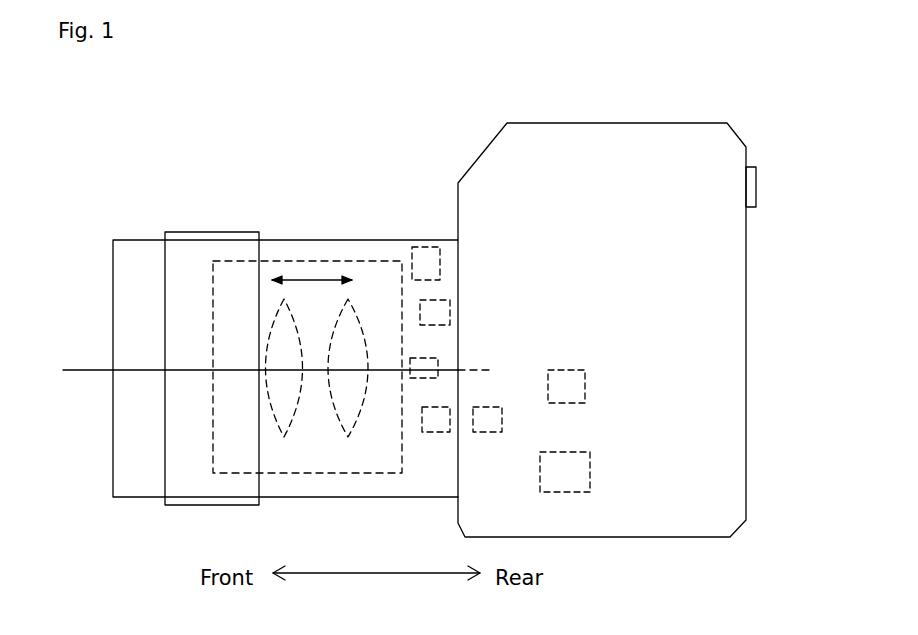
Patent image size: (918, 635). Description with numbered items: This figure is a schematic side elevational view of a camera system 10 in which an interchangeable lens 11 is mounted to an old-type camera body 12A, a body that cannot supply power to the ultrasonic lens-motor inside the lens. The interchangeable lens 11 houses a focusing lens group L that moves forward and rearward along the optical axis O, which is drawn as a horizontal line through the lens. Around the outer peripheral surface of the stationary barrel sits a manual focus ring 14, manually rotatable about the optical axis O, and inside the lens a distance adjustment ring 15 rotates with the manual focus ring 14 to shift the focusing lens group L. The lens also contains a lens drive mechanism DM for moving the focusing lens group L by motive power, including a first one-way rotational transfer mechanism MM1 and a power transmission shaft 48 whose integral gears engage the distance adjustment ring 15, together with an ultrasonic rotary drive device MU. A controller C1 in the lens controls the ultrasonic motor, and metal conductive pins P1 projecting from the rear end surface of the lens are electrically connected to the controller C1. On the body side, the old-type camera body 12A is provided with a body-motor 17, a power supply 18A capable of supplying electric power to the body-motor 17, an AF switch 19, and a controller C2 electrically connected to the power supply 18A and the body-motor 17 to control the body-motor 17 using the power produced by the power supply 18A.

The camera system 10 is at (350, 102).
The interchangeable lens 11 is at (231, 141).
The old-type camera body 12A is at (603, 112).
The manual focus ring 14 is at (186, 236).
The distance adjustment ring 15 is at (300, 260).
The body-motor 17 is at (497, 407).
The power supply 18A is at (567, 452).
The AF switch 19 is at (748, 167).
The power transmission shaft 48 is at (443, 362).
The controller C1 is at (422, 247).
The controller C2 is at (587, 387).
The metal conductive pins P1 is at (440, 264).
The ultrasonic rotary drive device MU is at (450, 305).
The first one-way rotational transfer mechanism MM1 is at (448, 430).
The lens drive mechanism DM is at (425, 440).
The focusing lens group L is at (285, 437).
The optical axis O is at (78, 372).